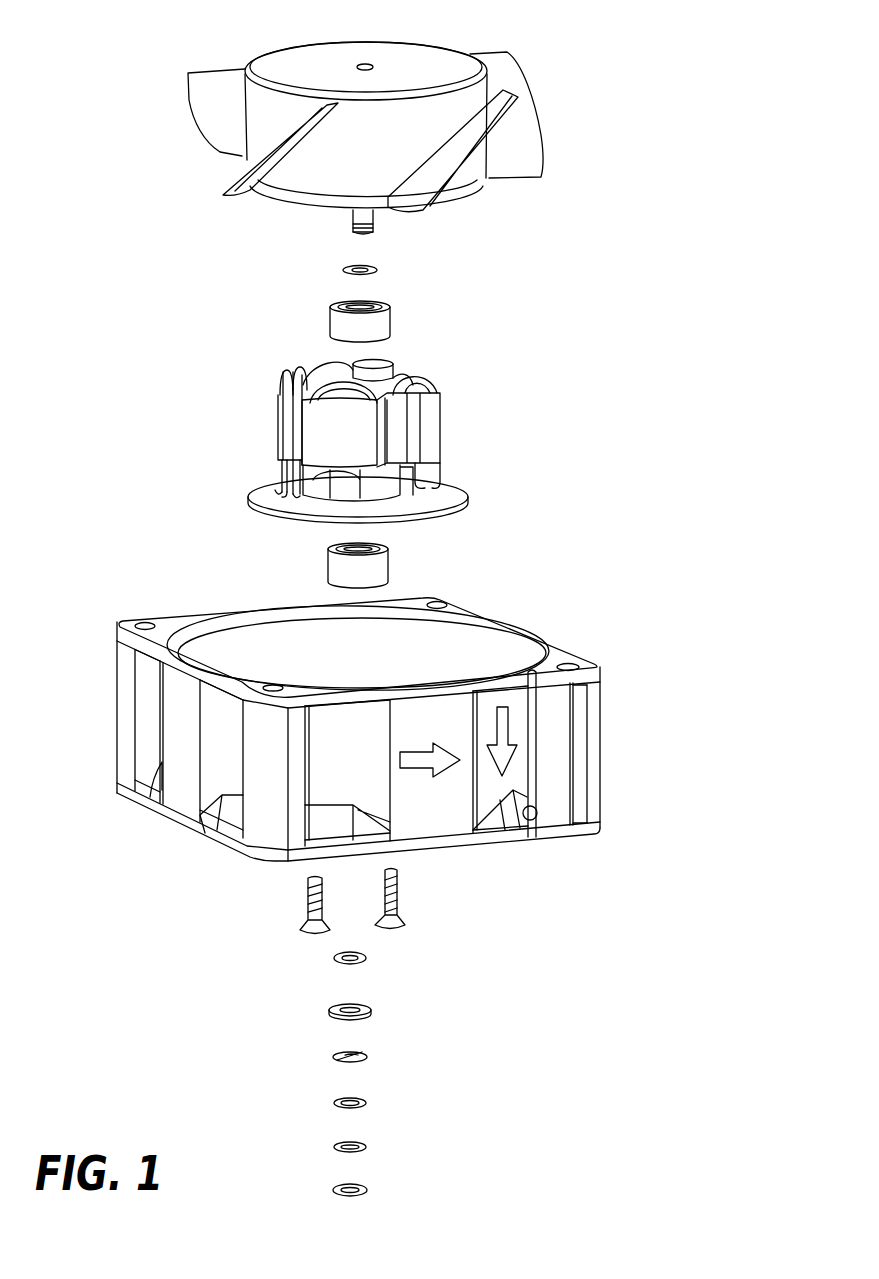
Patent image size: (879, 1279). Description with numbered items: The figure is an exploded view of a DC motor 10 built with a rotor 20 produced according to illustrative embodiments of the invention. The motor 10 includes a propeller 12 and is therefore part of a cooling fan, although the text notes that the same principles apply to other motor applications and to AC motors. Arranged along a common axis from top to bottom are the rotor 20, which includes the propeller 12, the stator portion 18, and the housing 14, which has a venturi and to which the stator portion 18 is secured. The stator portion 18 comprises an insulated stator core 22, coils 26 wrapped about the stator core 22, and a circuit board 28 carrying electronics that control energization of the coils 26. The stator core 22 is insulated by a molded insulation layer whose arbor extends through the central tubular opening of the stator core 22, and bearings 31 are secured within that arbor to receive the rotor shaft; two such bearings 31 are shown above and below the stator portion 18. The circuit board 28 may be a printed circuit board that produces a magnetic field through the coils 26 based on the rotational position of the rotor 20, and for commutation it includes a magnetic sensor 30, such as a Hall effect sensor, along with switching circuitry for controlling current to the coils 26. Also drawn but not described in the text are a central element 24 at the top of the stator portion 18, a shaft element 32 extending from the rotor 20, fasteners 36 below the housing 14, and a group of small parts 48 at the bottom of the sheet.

The motor 10 is at (708, 138).
The propeller 12 is at (286, 63).
The housing 14 is at (628, 759).
The stator portion 18 is at (246, 413).
The rotor 20 is at (553, 45).
The stator core 22 is at (433, 423).
The bearing tube 24 is at (390, 367).
The coils 26 is at (343, 392).
The circuit board 28 is at (437, 494).
The magnetic sensor 30 is at (277, 484).
The bearings 31 is at (377, 318).
The shaft 32 is at (350, 218).
The screws 36 is at (320, 895).
The washers 48 is at (397, 953).